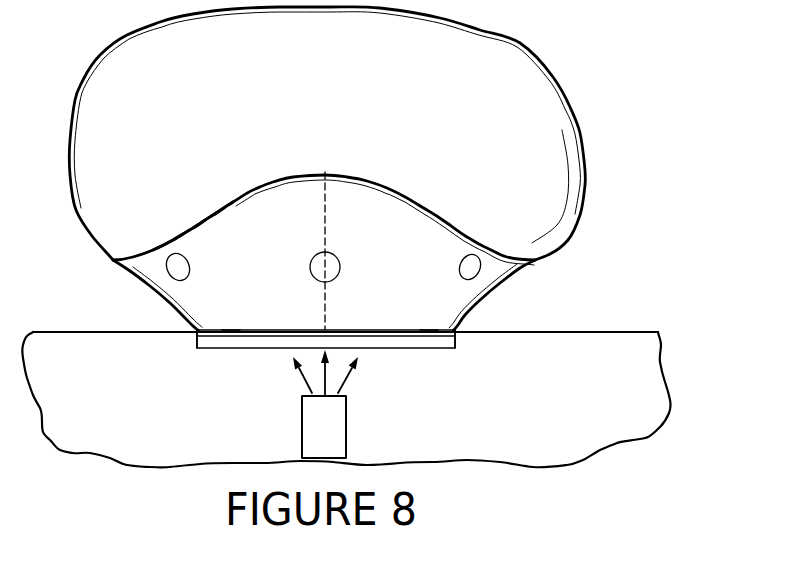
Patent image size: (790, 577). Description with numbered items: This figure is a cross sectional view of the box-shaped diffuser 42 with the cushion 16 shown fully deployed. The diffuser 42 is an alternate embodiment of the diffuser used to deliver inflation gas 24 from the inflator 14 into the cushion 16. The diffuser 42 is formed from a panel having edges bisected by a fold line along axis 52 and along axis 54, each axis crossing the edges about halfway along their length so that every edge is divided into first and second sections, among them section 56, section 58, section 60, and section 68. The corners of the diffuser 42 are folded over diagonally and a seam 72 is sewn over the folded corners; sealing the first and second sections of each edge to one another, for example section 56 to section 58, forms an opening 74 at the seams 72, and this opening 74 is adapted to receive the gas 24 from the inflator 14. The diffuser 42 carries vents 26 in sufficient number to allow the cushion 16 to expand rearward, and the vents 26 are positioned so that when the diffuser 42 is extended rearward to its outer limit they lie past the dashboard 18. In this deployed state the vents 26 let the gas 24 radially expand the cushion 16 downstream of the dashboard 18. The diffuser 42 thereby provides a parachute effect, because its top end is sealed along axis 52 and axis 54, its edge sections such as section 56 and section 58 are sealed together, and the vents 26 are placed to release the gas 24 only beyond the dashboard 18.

The inflator 14 is at (346, 425).
The cushion 16 is at (582, 129).
The dashboard 18 is at (623, 332).
The gas 24 is at (303, 378).
The vents 26 is at (317, 257).
The box-shaped diffuser 42 is at (412, 218).
The axis 52 is at (217, 207).
The axis 54 is at (332, 190).
The first edge section 56 is at (196, 342).
The second edge section 58 is at (440, 348).
The first edge section 60 is at (497, 299).
The first edge section 68 is at (150, 290).
The seam 72 is at (230, 330).
The opening 74 is at (370, 336).